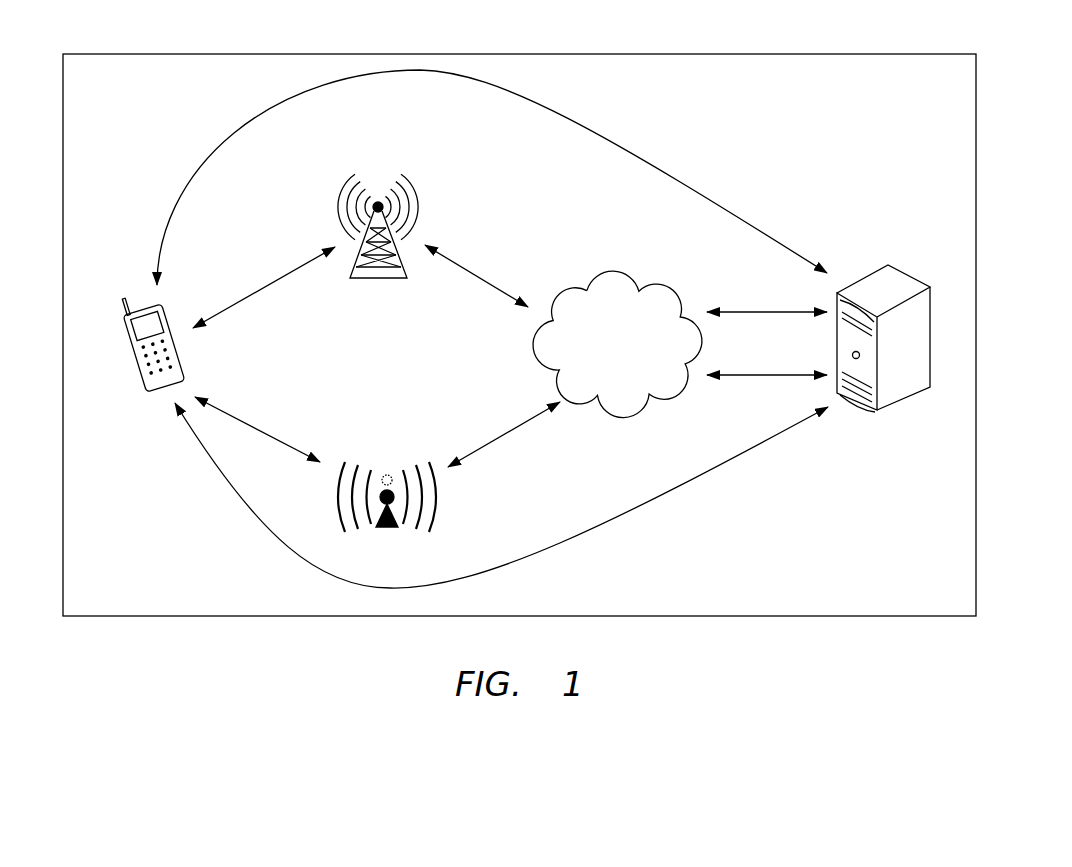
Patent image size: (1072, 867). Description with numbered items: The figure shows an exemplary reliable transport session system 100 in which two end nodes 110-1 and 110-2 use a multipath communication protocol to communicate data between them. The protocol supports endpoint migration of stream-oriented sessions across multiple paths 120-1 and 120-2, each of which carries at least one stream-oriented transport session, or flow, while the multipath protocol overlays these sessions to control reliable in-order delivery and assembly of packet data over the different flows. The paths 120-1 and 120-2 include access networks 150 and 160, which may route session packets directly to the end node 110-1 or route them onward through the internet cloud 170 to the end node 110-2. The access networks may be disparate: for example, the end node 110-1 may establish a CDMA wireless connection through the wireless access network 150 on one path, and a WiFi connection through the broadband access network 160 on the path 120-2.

The reliable transport session system 100 is at (1050, 425).
The end node 110-1 is at (133, 357).
The end node 110-2 is at (937, 454).
The path 120-1 is at (757, 165).
The path 120-2 is at (259, 537).
The wireless access network 150 is at (498, 223).
The broadband access network 160 is at (513, 505).
The internet cloud 170 is at (628, 271).